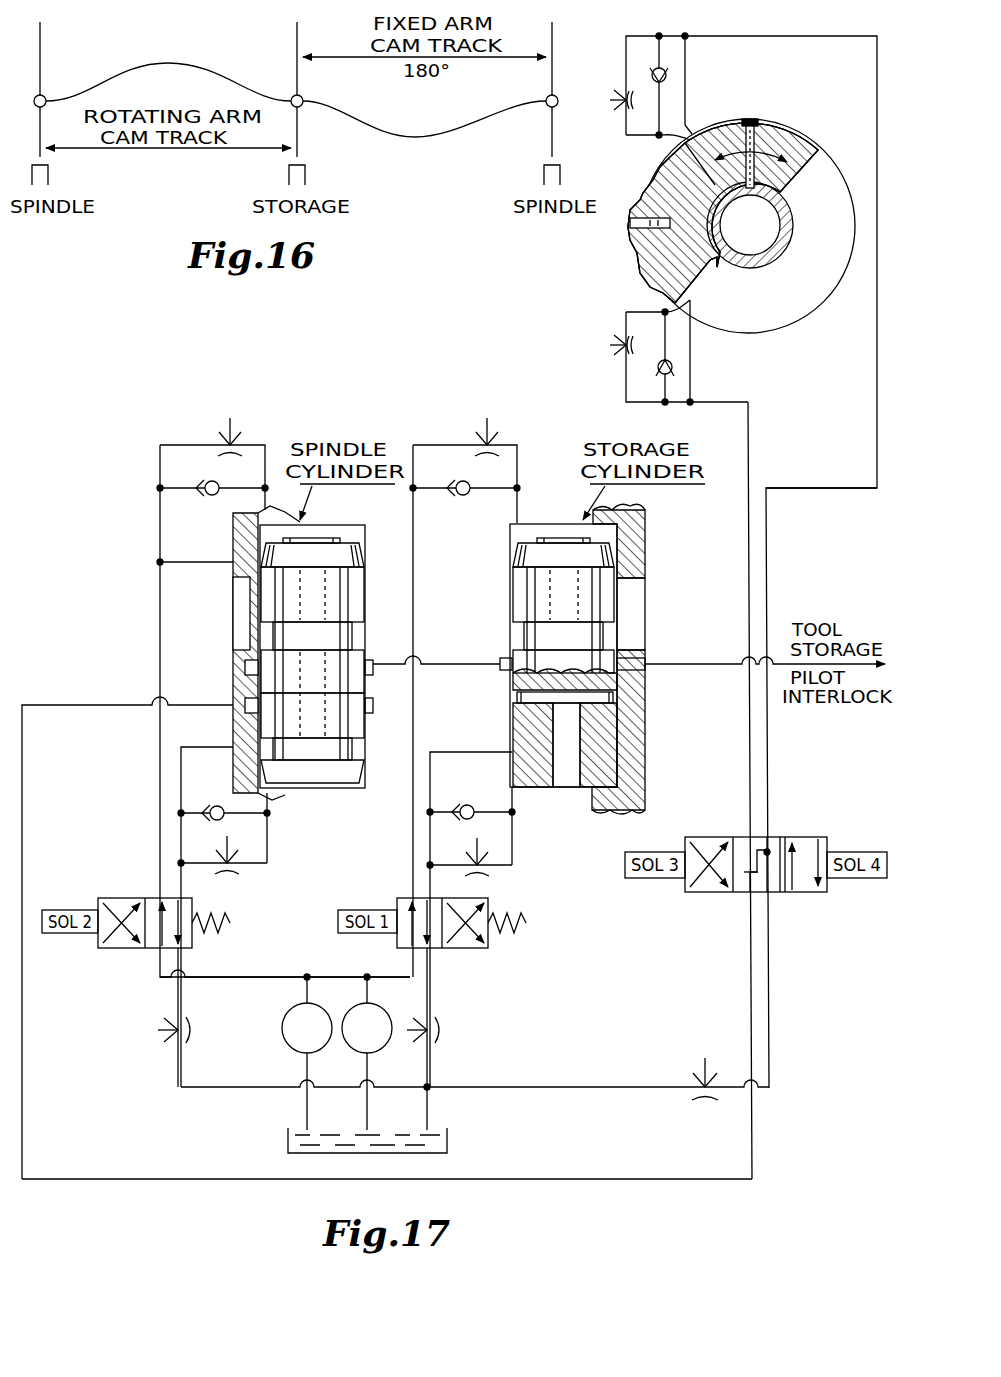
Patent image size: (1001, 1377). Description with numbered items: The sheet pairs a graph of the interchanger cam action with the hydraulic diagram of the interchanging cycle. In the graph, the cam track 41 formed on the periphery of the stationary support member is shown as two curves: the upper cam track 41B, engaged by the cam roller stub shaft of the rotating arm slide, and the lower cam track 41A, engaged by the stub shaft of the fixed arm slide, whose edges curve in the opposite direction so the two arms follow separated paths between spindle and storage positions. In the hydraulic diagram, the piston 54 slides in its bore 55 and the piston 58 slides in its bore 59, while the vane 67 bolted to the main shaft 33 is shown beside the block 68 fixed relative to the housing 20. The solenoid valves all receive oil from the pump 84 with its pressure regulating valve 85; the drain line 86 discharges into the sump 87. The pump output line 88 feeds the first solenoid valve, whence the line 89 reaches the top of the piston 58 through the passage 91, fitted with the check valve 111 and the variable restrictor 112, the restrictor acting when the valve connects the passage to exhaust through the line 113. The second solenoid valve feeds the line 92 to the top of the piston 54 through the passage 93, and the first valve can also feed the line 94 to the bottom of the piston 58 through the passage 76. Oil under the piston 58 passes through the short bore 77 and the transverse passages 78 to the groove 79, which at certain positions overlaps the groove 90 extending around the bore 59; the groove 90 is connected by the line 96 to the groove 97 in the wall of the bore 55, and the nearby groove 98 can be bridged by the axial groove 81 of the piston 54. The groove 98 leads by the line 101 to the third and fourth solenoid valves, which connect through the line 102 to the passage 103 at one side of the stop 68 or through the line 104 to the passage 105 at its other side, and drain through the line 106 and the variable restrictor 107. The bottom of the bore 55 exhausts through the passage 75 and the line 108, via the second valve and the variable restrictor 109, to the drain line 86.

In FIG. 16, the cam track 41 is at (103, 86).
In FIG. 16, the lower cam track 41A is at (392, 131).
In FIG. 16, the upper cam track 41B is at (188, 63).
In FIG. 17, the vane 67 is at (793, 135).
In FIG. 17, the passage 105 is at (650, 138).
In FIG. 17, the block 68 is at (668, 162).
In FIG. 17, the main shaft 33 is at (793, 213).
In FIG. 17, the housing 20 is at (632, 262).
In FIG. 17, the passage 103 is at (668, 304).
In FIG. 17, the line 104 is at (818, 480).
In FIG. 17, the line 102 is at (748, 725).
In FIG. 17, the variable restrictor 112 is at (495, 432).
In FIG. 17, the check valve 111 is at (470, 486).
In FIG. 17, the passage 93 is at (262, 498).
In FIG. 17, the passage 91 is at (517, 507).
In FIG. 17, the bore 55 is at (245, 542).
In FIG. 17, the bore 59 is at (610, 535).
In FIG. 17, the piston 54 is at (355, 591).
In FIG. 17, the piston 58 is at (515, 585).
In FIG. 17, the line 92 is at (160, 616).
In FIG. 17, the line 96 is at (392, 660).
In FIG. 17, the groove 90 is at (500, 660).
In FIG. 17, the groove 97 is at (374, 668).
In FIG. 17, the transverse passages 78 is at (612, 697).
In FIG. 17, the line 101 is at (58, 705).
In FIG. 17, the groove 81 is at (258, 720).
In FIG. 17, the groove 98 is at (375, 706).
In FIG. 17, the line 89 is at (413, 710).
In FIG. 17, the groove 79 is at (517, 703).
In FIG. 17, the passage 75 is at (278, 797).
In FIG. 17, the short bore 77 is at (566, 790).
In FIG. 17, the passage 76 is at (522, 815).
In FIG. 17, the line 108 is at (183, 890).
In FIG. 17, the line 94 is at (432, 893).
In FIG. 17, the line 88 is at (259, 977).
In FIG. 17, the pump 84 is at (385, 1008).
In FIG. 17, the pressure regulating valve 85 is at (284, 1018).
In FIG. 17, the line 113 is at (430, 993).
In FIG. 17, the variable restrictor 109 is at (166, 1027).
In FIG. 17, the variable restrictor 107 is at (708, 1062).
In FIG. 17, the line 106 is at (604, 1088).
In FIG. 17, the drain line 86 is at (430, 1105).
In FIG. 17, the sump 87 is at (449, 1143).